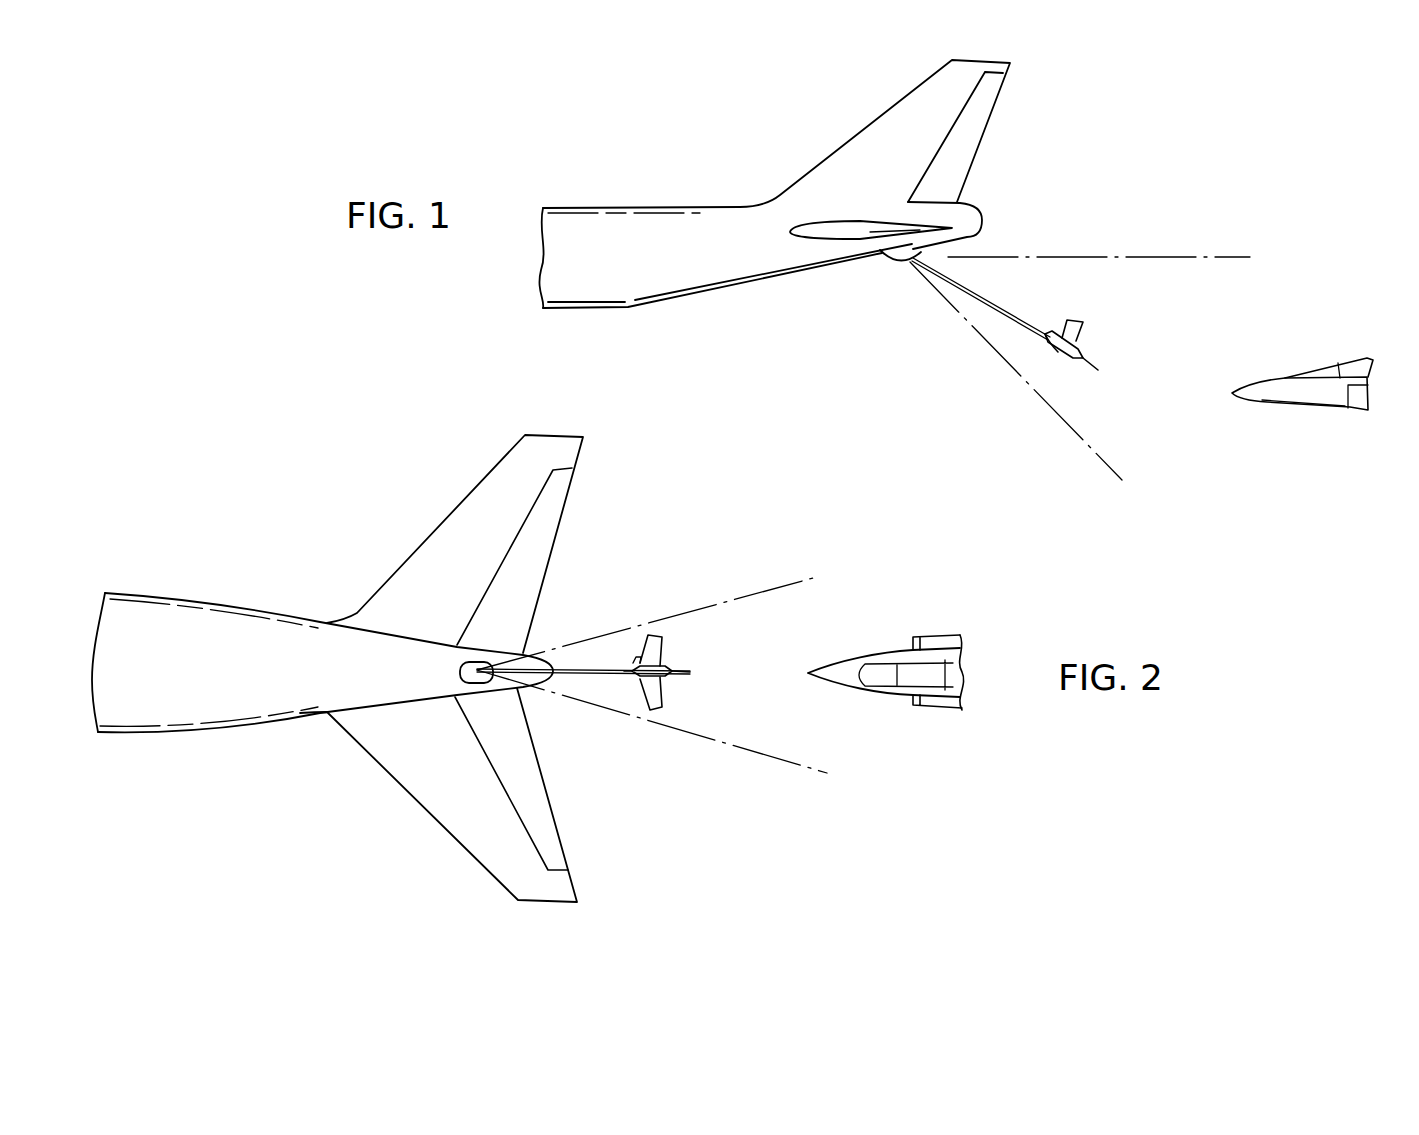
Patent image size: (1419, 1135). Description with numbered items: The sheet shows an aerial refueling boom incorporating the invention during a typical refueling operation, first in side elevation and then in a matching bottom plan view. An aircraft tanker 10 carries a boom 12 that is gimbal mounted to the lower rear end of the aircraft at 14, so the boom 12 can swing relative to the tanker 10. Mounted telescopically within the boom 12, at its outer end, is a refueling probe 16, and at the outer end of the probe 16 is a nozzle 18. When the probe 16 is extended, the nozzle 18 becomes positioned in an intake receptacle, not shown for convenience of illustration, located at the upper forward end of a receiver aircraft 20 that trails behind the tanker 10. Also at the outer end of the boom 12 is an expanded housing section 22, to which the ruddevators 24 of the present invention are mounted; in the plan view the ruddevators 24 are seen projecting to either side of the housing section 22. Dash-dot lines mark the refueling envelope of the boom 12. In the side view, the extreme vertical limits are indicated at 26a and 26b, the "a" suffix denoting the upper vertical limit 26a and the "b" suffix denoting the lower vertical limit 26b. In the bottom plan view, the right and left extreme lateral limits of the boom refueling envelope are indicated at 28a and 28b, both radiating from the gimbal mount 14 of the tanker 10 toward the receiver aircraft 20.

In FIG. 1, the aircraft tanker 10 is at (720, 183).
In FIG. 2, the aircraft tanker 10 is at (277, 587).
In FIG. 1, the boom 12 is at (1000, 307).
In FIG. 2, the boom 12 is at (587, 670).
In FIG. 1, the gimbal mount 14 is at (903, 267).
In FIG. 2, the gimbal mount 14 is at (462, 667).
In FIG. 1, the refueling probe 16 is at (1083, 358).
In FIG. 2, the refueling probe 16 is at (673, 668).
In FIG. 1, the nozzle 18 is at (1090, 370).
In FIG. 2, the nozzle 18 is at (688, 673).
In FIG. 1, the receiver aircraft 20 is at (1332, 353).
In FIG. 2, the receiver aircraft 20 is at (928, 620).
In FIG. 1, the expanded housing section 22 is at (1058, 352).
In FIG. 2, the expanded housing section 22 is at (633, 673).
In FIG. 1, the ruddevators 24 is at (1083, 322).
In FIG. 2, the ruddevators 24 is at (663, 643).
In FIG. 1, the upper vertical limit of refueling envelope 26a is at (1172, 257).
In FIG. 1, the lower vertical limit of refueling envelope 26b is at (1080, 438).
In FIG. 2, the right lateral limit of refueling envelope 28a is at (767, 590).
In FIG. 2, the left lateral limit of refueling envelope 28b is at (732, 753).